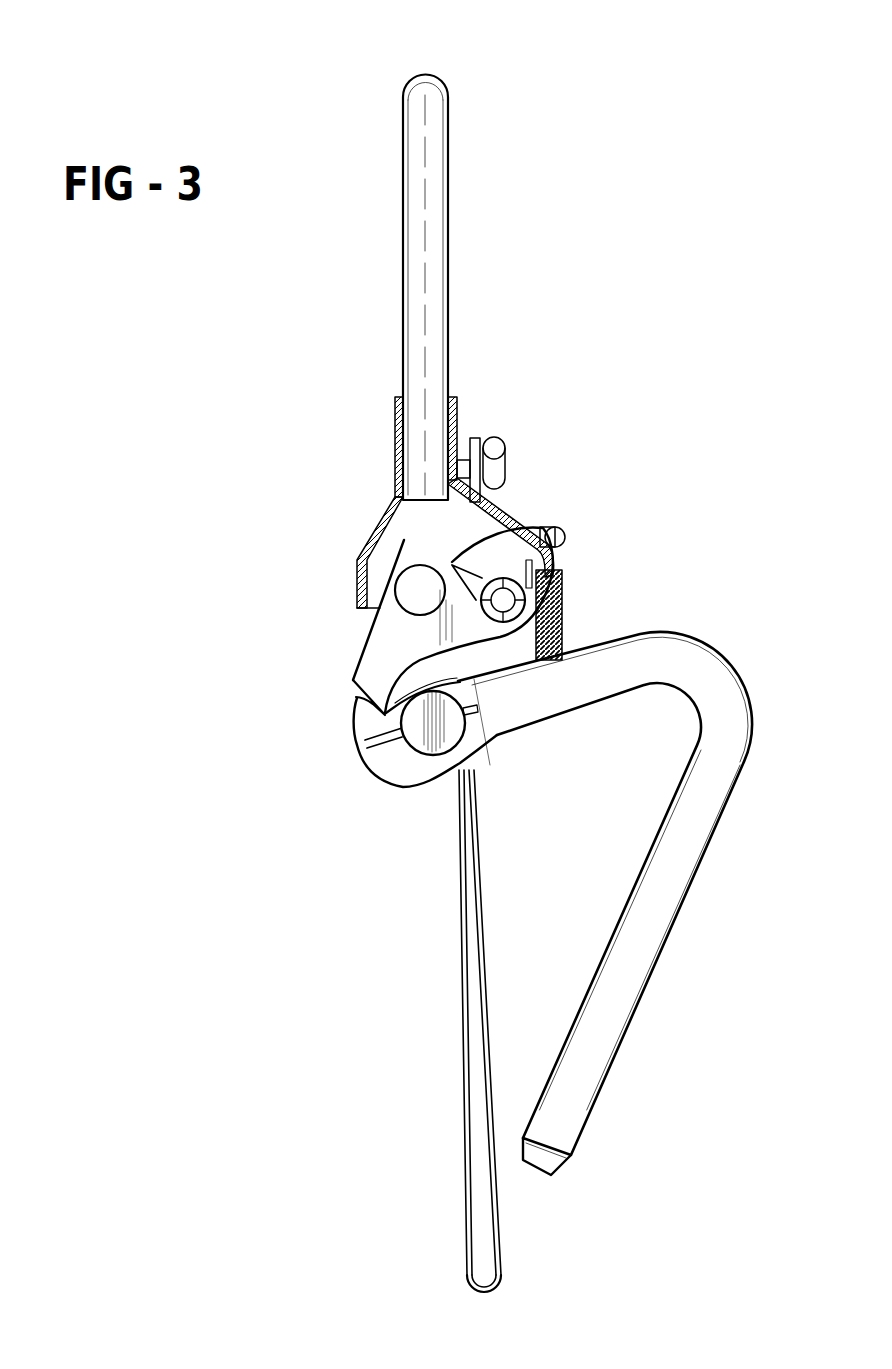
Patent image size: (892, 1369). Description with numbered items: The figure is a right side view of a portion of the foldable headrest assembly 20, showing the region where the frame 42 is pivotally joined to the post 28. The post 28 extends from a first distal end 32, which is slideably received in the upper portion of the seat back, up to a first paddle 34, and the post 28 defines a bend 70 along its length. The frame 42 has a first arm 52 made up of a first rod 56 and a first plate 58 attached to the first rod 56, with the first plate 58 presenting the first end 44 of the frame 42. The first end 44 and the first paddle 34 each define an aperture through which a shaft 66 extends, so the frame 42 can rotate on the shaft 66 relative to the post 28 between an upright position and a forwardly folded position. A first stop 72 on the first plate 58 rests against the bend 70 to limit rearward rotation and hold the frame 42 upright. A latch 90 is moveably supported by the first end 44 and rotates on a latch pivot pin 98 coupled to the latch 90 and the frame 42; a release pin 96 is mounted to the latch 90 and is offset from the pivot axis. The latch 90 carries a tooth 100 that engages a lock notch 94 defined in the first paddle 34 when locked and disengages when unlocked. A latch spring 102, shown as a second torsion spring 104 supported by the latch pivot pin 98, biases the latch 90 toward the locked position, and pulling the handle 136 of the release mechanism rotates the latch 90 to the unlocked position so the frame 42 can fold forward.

The foldable headrest assembly 20 is at (447, 63).
The post 28 is at (614, 1022).
The first distal end 32 is at (556, 1165).
The first paddle 34 is at (392, 770).
The frame 42 is at (432, 148).
The first end 44 is at (355, 594).
The first arm 52 is at (443, 344).
The first rod 56 is at (433, 270).
The first plate 58 is at (396, 441).
The shaft 66 is at (422, 740).
The bend 70 is at (716, 688).
The first stop 72 is at (558, 625).
The latch 90 is at (388, 632).
The lock notch 94 is at (357, 729).
The release pin 96 is at (562, 567).
The latch pivot pin 98 is at (407, 588).
The tooth 100 is at (365, 678).
The latch spring 102 is at (504, 598).
The second torsion spring 104 is at (456, 562).
The handle 136 is at (468, 1262).